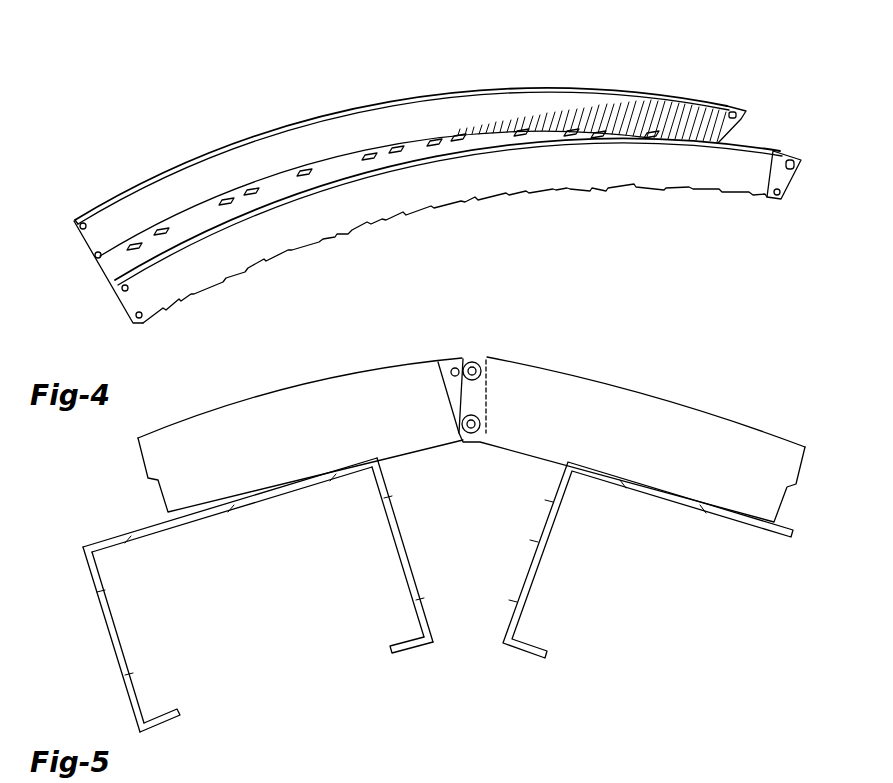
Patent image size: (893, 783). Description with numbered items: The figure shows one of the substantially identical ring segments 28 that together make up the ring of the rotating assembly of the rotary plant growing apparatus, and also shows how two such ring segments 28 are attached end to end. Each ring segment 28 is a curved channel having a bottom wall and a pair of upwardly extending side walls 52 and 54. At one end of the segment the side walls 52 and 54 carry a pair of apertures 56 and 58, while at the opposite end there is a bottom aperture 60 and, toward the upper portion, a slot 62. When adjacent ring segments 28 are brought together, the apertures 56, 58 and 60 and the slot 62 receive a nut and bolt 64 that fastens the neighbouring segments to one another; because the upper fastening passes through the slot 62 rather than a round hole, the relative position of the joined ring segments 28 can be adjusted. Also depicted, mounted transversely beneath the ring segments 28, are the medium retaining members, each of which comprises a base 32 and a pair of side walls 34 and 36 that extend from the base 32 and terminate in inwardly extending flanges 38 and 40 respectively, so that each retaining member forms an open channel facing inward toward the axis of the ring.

In FIG. 4, the ring segment 28 is at (630, 80).
In FIG. 5, the ring segment 28 is at (357, 369).
In FIG. 5, the base 32 is at (247, 506).
In FIG. 5, the side wall 34 is at (112, 617).
In FIG. 5, the side wall 36 is at (394, 540).
In FIG. 5, the flange 38 is at (167, 727).
In FIG. 5, the flange 40 is at (402, 648).
In FIG. 4, the side wall 52 is at (300, 137).
In FIG. 4, the side wall 54 is at (343, 223).
In FIG. 4, the aperture 56 is at (81, 224).
In FIG. 4, the aperture 58 is at (95, 254).
In FIG. 4, the bottom aperture 60 is at (779, 199).
In FIG. 4, the slot 62 is at (790, 158).
In FIG. 5, the slot 62 is at (455, 368).
In FIG. 5, the nut and bolt 64 is at (479, 362).